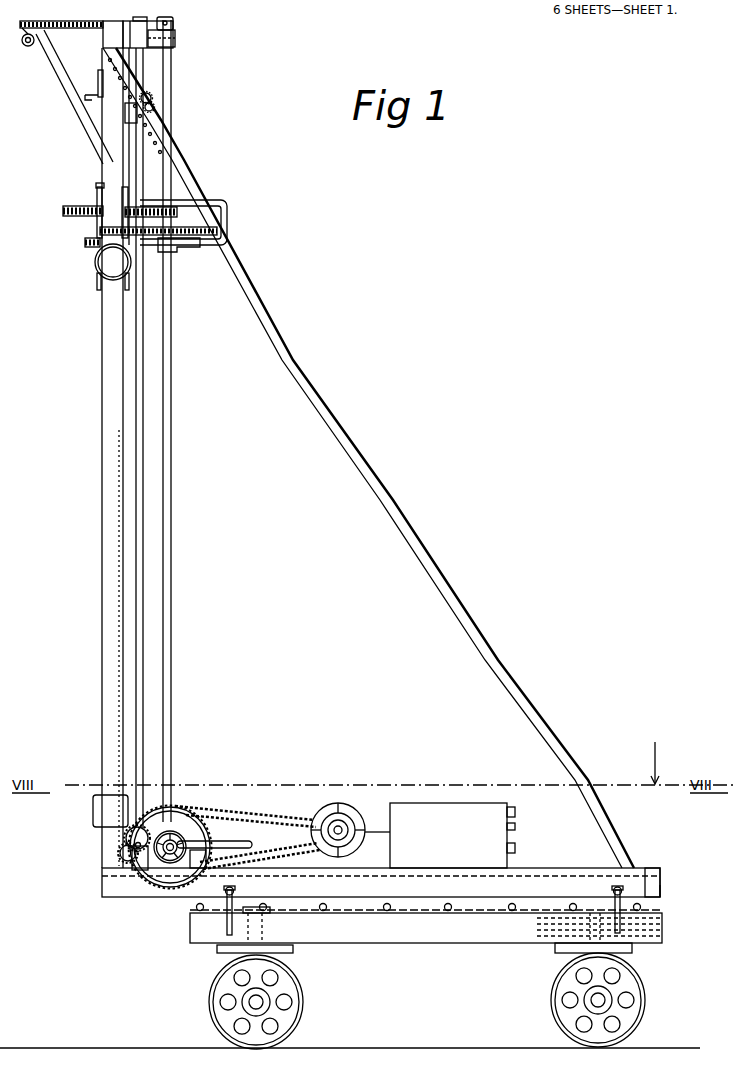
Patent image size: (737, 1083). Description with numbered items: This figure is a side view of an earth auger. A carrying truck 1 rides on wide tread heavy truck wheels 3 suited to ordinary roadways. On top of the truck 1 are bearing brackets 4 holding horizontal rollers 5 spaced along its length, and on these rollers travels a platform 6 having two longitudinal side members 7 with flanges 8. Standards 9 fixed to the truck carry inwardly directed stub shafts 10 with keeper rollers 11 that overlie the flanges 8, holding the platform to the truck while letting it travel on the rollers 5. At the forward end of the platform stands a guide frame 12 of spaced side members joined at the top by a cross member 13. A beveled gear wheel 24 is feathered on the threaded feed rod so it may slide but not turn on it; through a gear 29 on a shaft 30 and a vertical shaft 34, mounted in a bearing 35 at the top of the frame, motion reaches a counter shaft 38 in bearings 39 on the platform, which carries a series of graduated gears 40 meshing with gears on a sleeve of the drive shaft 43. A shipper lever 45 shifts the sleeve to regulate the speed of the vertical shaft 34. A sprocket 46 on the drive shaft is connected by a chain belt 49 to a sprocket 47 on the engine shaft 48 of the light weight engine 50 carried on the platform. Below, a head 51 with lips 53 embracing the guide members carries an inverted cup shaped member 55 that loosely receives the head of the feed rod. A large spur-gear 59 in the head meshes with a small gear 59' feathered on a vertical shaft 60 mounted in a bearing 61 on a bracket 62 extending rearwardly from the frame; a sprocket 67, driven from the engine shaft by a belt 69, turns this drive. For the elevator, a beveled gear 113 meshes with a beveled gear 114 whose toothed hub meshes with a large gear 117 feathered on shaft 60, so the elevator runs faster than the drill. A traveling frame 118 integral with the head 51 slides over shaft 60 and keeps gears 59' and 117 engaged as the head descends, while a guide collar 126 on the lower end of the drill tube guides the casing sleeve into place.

The carrying truck 1 is at (425, 936).
The wheels 3 is at (303, 985).
The bearing brackets 4 is at (452, 906).
The horizontal rollers 5 is at (440, 907).
The platform 6 is at (535, 868).
The longitudinal parallel side members 7 is at (668, 876).
The flanges 8 is at (664, 889).
The standards 9 is at (228, 904).
The stub shafts 10 is at (234, 893).
The rollers 11 is at (226, 889).
The guide frame 12 is at (107, 515).
The cross member 13 is at (103, 38).
The beveled gear wheel 24 is at (78, 100).
The gear 29 is at (153, 106).
The shaft 30 is at (152, 96).
The vertical shaft 34 is at (140, 458).
The bearing 35 is at (143, 45).
The counter shaft 38 is at (123, 850).
The bearings 39 is at (133, 862).
The graduated gears 40 is at (122, 840).
The drive shaft 43 is at (176, 858).
The shipper lever 45 is at (225, 845).
The sprocket 46 is at (165, 862).
The sprocket 47 is at (330, 834).
The engine shaft 48 is at (350, 815).
The chain belt 49 is at (283, 852).
The engine 50 is at (443, 802).
The head 51 is at (97, 200).
The lips 53 is at (100, 230).
The inverted cup shaped member 55 is at (97, 188).
The spur-gear 59 is at (61, 213).
The small gear 59' is at (172, 187).
The vertical shaft 60 is at (165, 550).
The bearing 61 is at (173, 40).
The bracket 62 is at (172, 47).
The sprocket 67 is at (186, 822).
The belt 69 is at (245, 809).
The beveled gear 113 is at (97, 276).
The beveled gear 114 is at (88, 246).
The large gear 117 is at (190, 250).
The traveling frame 118 is at (228, 214).
The guide collar 126 is at (93, 812).